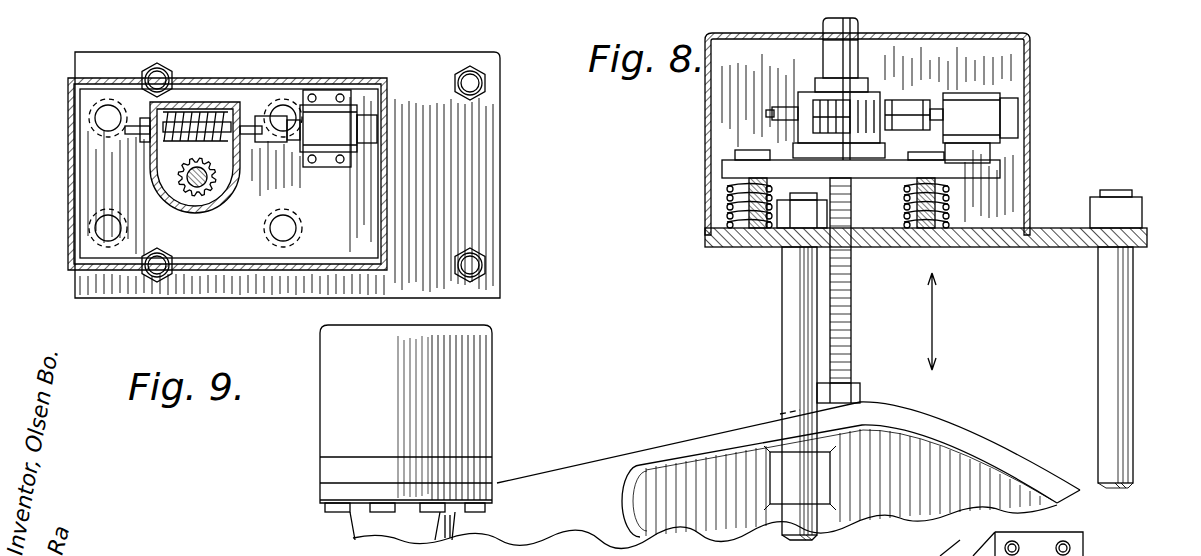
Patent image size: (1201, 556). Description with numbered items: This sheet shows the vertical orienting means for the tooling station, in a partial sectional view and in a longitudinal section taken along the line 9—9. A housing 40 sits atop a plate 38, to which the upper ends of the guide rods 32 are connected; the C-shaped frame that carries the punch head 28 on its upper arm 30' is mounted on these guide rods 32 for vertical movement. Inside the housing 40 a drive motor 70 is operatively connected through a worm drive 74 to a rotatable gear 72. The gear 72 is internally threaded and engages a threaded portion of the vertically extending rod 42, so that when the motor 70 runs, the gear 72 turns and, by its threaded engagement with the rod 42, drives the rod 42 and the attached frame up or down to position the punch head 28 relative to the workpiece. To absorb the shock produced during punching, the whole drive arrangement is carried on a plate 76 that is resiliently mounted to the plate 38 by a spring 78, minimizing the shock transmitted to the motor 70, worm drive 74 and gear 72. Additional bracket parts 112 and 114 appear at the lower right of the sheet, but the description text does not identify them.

In FIG. 8, the section line 9— 9 is at (755, 107).
In FIG. 8, the punch head 28 is at (470, 353).
In FIG. 8, the upper arm 30' is at (716, 475).
In FIG. 9, the guide rods 32 is at (157, 70).
In FIG. 8, the guide rods 32 is at (793, 325).
In FIG. 9, the plate 38 is at (483, 163).
In FIG. 8, the plate 38 is at (1150, 238).
In FIG. 8, the housing 40 is at (1028, 140).
In FIG. 8, the vertical rod 42 is at (848, 315).
In FIG. 9, the drive motor 70 is at (343, 127).
In FIG. 8, the drive motor 70 is at (967, 100).
In FIG. 9, the gear 72 is at (232, 190).
In FIG. 9, the worm drive 74 is at (213, 113).
In FIG. 9, the plate 76 is at (342, 198).
In FIG. 8, the plate 76 is at (980, 170).
In FIG. 9, the spring 78 is at (67, 107).
In FIG. 8, the spring 78 is at (727, 203).
In FIG. 8, the bracket plate 112 is at (1160, 549).
In FIG. 8, the bracket arm 114 is at (930, 546).